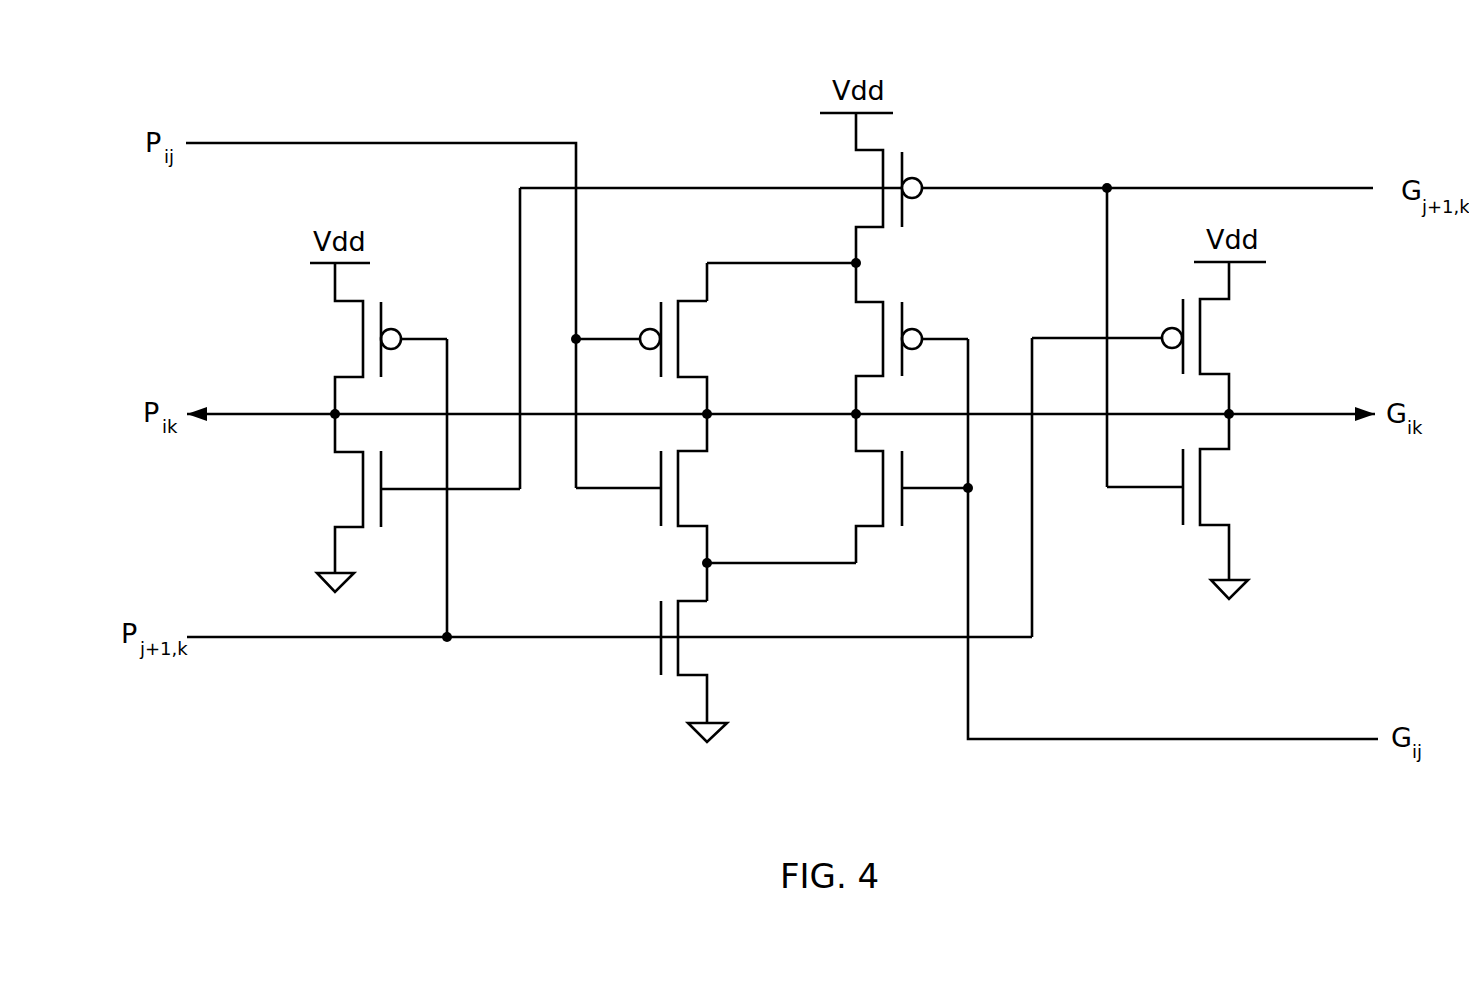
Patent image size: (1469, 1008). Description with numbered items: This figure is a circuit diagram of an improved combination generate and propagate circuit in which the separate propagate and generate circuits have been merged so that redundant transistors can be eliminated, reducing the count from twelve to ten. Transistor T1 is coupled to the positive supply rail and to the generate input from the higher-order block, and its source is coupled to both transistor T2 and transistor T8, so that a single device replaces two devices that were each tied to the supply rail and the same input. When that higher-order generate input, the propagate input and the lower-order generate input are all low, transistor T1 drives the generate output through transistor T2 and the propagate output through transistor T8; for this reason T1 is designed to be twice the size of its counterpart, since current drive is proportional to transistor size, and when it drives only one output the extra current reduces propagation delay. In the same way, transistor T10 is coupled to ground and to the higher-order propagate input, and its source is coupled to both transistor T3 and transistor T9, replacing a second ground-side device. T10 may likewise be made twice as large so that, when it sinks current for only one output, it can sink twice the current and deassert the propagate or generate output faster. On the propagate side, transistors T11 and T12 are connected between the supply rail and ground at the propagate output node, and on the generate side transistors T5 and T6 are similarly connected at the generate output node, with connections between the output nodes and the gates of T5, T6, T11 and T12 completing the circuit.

The transistor T1 is at (882, 188).
The transistor T2 is at (903, 338).
The transistor T3 is at (903, 488).
The transistor T5 is at (1148, 338).
The transistor T6 is at (1185, 506).
The transistor T8 is at (652, 357).
The transistor T9 is at (652, 507).
The transistor T10 is at (701, 671).
The transistor T11 is at (379, 338).
The transistor T12 is at (416, 503).